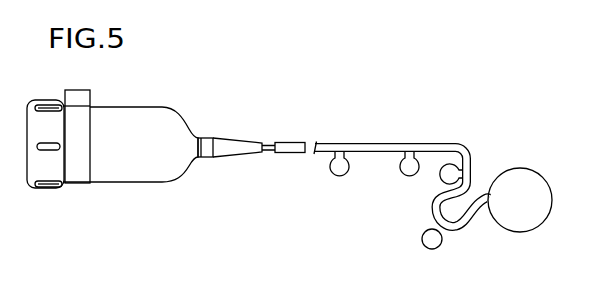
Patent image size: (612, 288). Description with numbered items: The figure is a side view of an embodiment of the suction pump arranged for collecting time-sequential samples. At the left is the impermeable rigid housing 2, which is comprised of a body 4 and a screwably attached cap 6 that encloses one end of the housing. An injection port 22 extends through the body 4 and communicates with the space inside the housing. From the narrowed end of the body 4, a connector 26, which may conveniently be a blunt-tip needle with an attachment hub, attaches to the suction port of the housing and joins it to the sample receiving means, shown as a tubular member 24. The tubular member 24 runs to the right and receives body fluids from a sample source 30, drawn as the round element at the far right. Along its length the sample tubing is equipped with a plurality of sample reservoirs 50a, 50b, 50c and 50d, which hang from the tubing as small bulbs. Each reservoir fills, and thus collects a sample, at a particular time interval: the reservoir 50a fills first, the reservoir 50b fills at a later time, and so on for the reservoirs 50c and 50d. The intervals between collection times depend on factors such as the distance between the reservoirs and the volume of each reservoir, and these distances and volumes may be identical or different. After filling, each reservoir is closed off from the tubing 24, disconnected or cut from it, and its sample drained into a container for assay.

The rigid housing 2 is at (149, 104).
The body 4 is at (117, 183).
The cap 6 is at (45, 192).
The injection port 22 is at (88, 91).
The tubular member 24 is at (447, 143).
The connector 26 is at (272, 141).
The sample source 30 is at (521, 167).
The sample reservoir 50a is at (422, 236).
The sample reservoir 50b is at (441, 181).
The sample reservoir 50c is at (401, 173).
The sample reservoir 50d is at (332, 176).